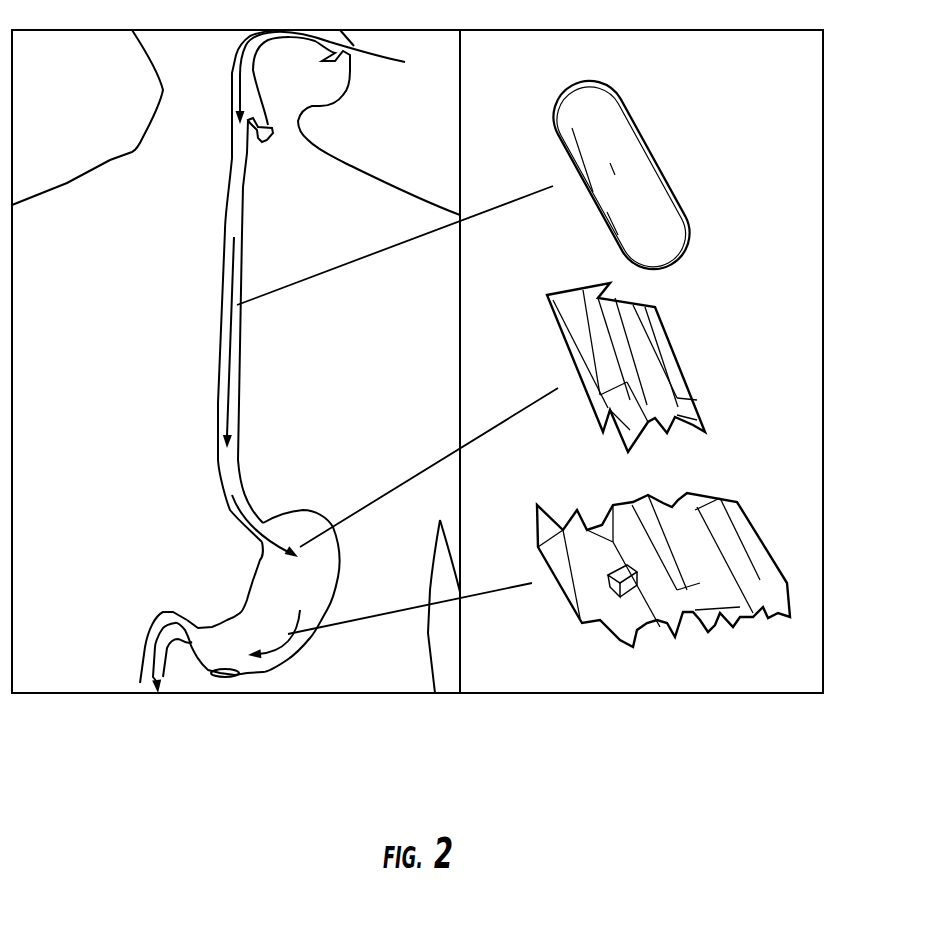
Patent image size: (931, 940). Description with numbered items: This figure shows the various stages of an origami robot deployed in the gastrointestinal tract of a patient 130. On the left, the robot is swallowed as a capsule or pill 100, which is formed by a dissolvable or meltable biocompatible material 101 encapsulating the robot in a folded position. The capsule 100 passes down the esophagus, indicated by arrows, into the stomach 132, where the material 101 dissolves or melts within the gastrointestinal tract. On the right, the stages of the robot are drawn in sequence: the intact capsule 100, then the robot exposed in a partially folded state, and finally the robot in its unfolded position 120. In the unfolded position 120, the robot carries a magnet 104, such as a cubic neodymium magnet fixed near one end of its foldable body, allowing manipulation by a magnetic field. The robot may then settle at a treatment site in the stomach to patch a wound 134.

The capsule or pill 100 is at (652, 90).
The biocompatible encapsulating material 101 is at (650, 178).
The magnet 104 is at (622, 577).
The unfolded position 120 is at (701, 563).
The patient 130 is at (105, 145).
The stomach 132 is at (310, 510).
The wound 134 is at (220, 663).